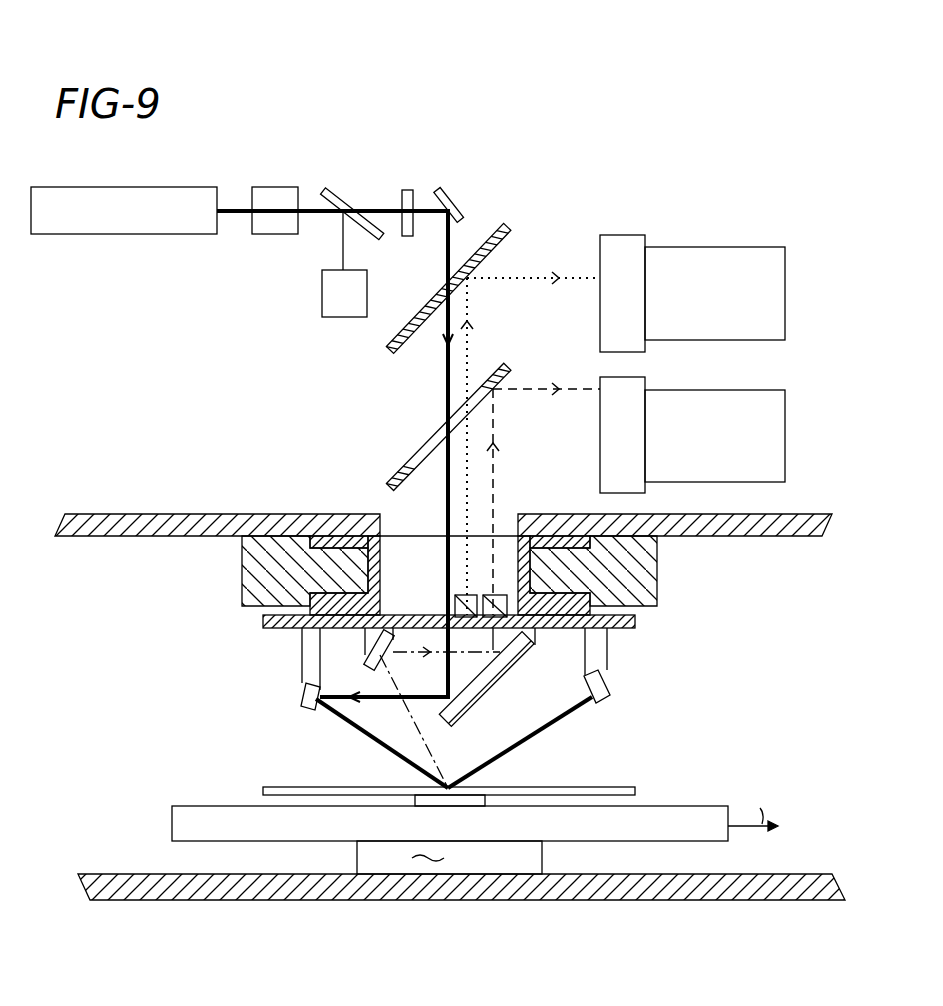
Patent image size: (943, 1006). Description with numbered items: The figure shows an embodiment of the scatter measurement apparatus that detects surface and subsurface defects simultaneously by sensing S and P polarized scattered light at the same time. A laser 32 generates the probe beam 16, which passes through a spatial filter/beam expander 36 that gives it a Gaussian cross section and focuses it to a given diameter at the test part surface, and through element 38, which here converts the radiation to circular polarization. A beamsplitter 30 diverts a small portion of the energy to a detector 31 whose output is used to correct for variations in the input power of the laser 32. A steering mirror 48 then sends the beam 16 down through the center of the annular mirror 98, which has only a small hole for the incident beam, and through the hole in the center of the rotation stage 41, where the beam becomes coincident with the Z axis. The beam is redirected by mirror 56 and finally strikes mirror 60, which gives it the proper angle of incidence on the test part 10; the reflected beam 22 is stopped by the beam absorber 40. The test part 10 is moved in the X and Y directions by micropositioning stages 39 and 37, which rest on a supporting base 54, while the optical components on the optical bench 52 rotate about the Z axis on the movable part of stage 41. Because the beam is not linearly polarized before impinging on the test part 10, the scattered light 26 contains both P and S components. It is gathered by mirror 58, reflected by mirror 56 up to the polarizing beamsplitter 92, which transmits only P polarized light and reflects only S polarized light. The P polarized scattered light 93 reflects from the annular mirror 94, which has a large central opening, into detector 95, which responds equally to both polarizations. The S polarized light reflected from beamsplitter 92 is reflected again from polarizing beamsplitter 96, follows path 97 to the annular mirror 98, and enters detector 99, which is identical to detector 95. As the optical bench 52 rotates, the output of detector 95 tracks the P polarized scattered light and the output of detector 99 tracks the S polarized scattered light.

The test part 10 is at (618, 789).
The probe beam 16 is at (446, 262).
The reflected beam 22 is at (540, 729).
The scattered light 26 is at (430, 745).
The beamsplitter 30 is at (345, 192).
The detector 31 is at (322, 296).
The laser 32 is at (155, 187).
The spatial filter/beam expander 36 is at (288, 187).
The micropositioning stage 37 is at (705, 806).
The polarizer 38 is at (408, 190).
The micropositioning stage 39 is at (543, 860).
The beam absorber 40 is at (612, 700).
The rotation stage 41 is at (660, 578).
The steering mirror 48 is at (455, 200).
The optical bench 52 is at (637, 623).
The support plate 54 is at (794, 538).
The mirror 56 is at (494, 678).
The mirror 58 is at (372, 664).
The mirror 60 is at (303, 696).
The polarizing beamsplitter 92 is at (492, 594).
The P polarized scattered light 93 is at (494, 471).
The annular mirror 94 is at (393, 471).
The detector 95 is at (829, 385).
The polarizing beamsplitter 96 is at (458, 593).
The path 97 is at (468, 309).
The annular mirror 98 is at (390, 351).
The detector 99 is at (829, 235).